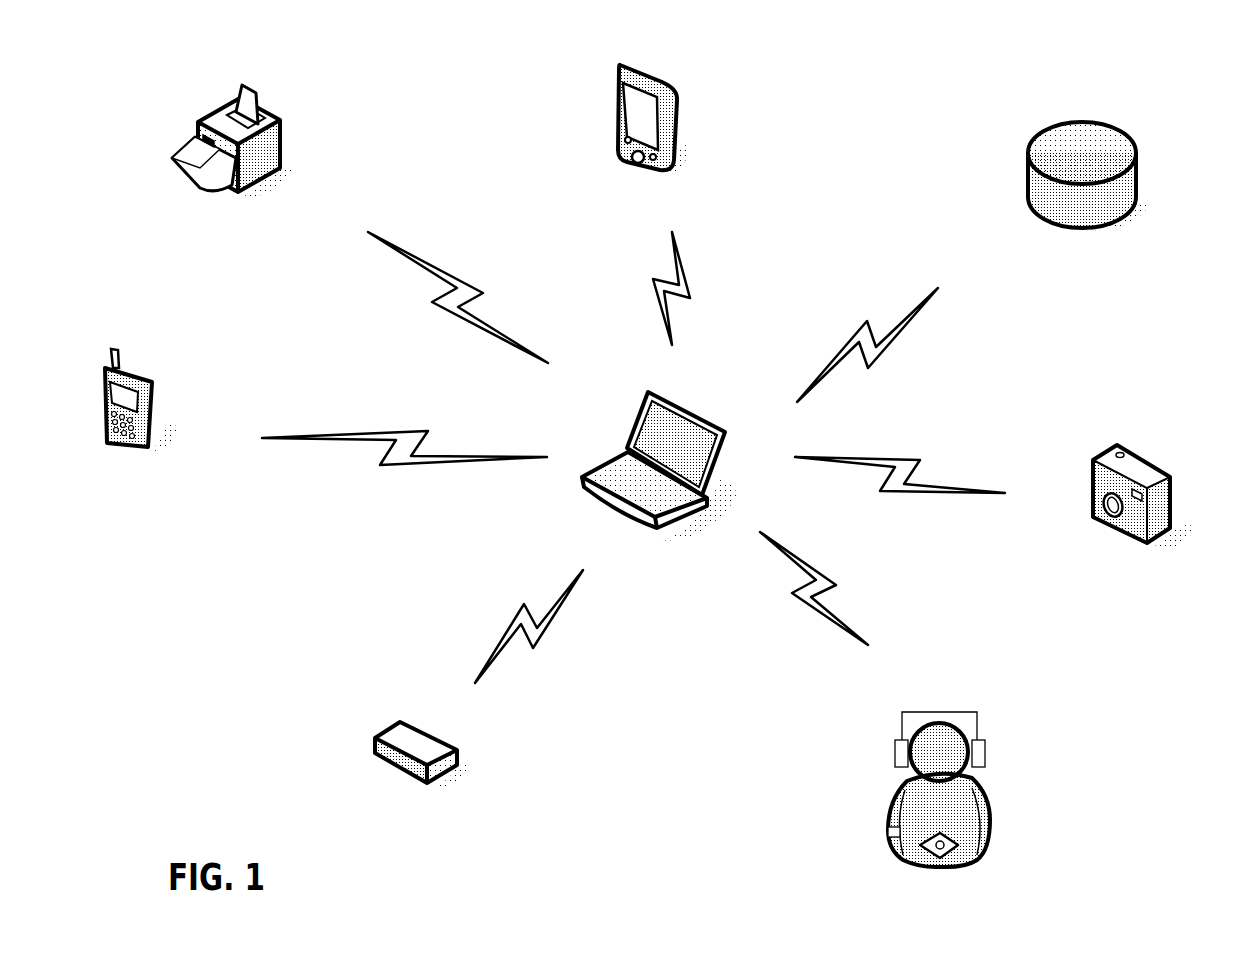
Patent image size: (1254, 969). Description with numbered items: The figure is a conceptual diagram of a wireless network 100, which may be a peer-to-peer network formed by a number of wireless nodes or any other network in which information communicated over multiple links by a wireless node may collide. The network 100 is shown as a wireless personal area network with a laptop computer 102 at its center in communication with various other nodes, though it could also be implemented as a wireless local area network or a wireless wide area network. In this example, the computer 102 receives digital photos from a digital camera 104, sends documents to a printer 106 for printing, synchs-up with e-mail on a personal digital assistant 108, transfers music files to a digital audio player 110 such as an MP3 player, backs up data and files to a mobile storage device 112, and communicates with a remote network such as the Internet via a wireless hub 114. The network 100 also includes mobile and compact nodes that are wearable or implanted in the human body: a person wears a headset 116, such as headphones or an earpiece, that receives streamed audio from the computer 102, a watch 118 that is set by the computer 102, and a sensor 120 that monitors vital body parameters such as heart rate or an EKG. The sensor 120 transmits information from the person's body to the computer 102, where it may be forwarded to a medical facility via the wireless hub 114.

The network 100 is at (488, 72).
The laptop computer 102 is at (632, 432).
The digital camera 104 is at (1172, 508).
The printer 106 is at (282, 158).
The personal digital assistant (PDA) 108 is at (153, 411).
The digital audio player 110 is at (675, 118).
The mobile storage device 112 is at (1138, 193).
The wireless hub 114 is at (460, 748).
The headset 116 is at (978, 712).
The watch 118 is at (887, 832).
The sensor 120 is at (992, 852).